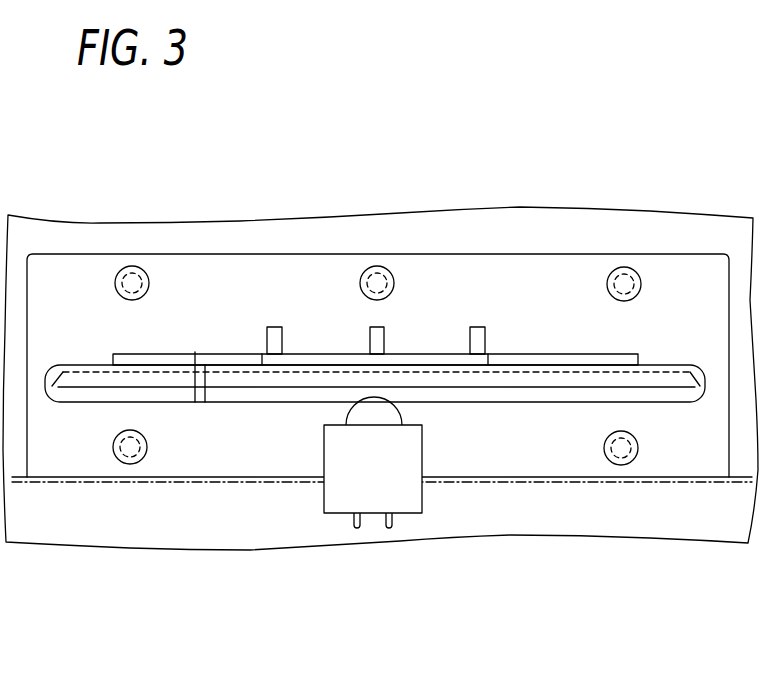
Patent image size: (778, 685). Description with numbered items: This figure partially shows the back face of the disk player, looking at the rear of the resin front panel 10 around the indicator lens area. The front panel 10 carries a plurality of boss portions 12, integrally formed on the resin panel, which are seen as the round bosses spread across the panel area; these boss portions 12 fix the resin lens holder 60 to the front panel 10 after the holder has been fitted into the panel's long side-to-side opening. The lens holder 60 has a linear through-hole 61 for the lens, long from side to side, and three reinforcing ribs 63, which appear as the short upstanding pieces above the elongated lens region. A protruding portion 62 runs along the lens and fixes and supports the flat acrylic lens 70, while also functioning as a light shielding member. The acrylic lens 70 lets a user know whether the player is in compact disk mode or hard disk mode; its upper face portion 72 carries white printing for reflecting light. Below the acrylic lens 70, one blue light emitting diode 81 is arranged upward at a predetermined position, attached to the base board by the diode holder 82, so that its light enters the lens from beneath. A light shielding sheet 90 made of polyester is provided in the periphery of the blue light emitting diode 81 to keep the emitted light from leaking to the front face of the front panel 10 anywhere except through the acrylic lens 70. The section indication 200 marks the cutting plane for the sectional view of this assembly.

The front panel 10 is at (722, 233).
The boss portions 12 is at (132, 266).
The lens holder 60 is at (685, 305).
The through-hole for lens 61 is at (93, 372).
The protruding portion 62 is at (155, 354).
The reinforcing ribs 63 is at (274, 327).
The acrylic lens 70 is at (541, 405).
The upper face portion 72 is at (193, 402).
The blue light emitting diode 81 is at (345, 412).
The diode holder 82 is at (338, 515).
The light shielding sheet 90 is at (690, 484).
The section line 200 is at (378, 175).